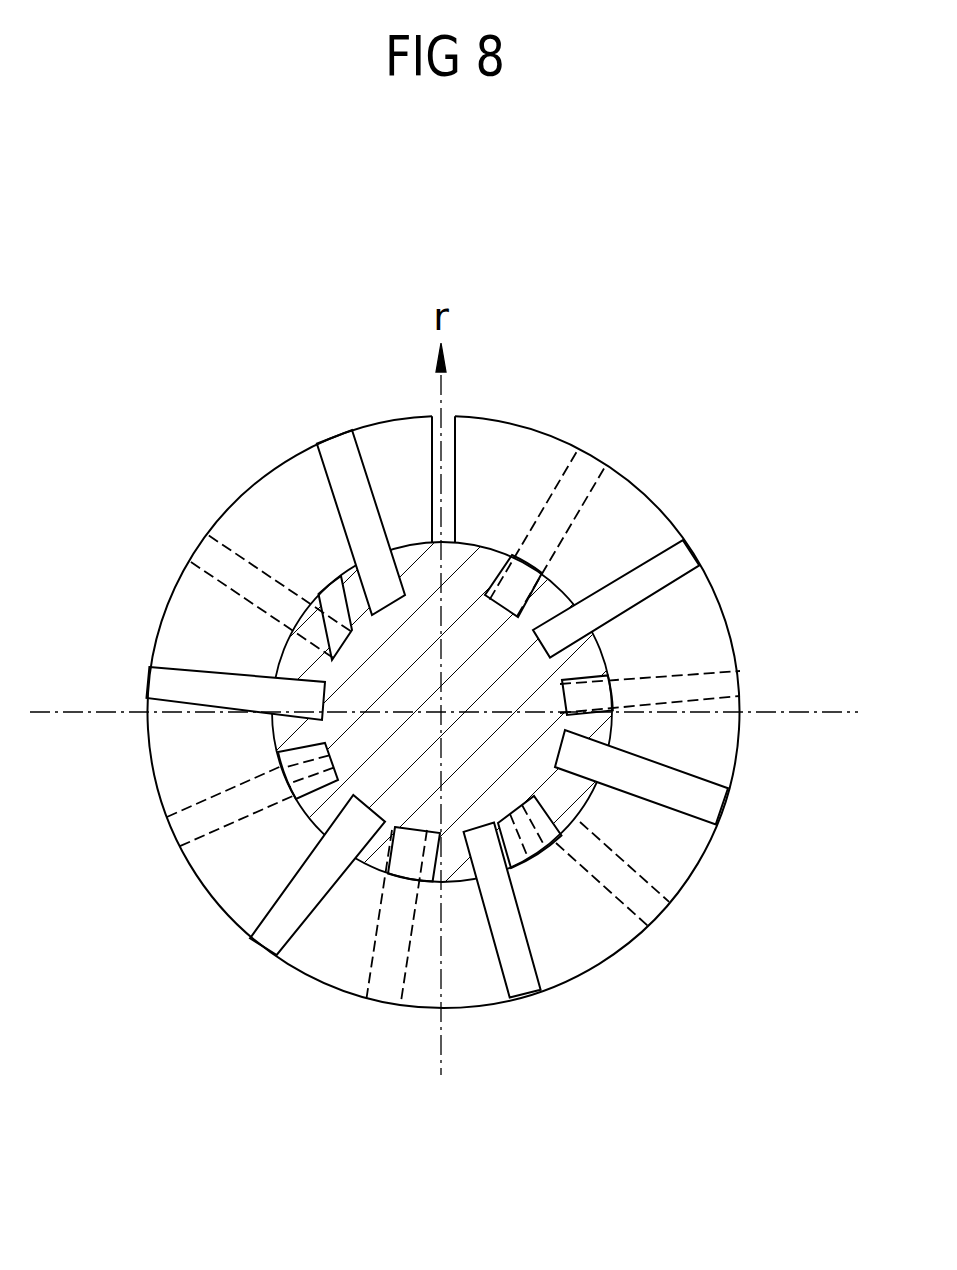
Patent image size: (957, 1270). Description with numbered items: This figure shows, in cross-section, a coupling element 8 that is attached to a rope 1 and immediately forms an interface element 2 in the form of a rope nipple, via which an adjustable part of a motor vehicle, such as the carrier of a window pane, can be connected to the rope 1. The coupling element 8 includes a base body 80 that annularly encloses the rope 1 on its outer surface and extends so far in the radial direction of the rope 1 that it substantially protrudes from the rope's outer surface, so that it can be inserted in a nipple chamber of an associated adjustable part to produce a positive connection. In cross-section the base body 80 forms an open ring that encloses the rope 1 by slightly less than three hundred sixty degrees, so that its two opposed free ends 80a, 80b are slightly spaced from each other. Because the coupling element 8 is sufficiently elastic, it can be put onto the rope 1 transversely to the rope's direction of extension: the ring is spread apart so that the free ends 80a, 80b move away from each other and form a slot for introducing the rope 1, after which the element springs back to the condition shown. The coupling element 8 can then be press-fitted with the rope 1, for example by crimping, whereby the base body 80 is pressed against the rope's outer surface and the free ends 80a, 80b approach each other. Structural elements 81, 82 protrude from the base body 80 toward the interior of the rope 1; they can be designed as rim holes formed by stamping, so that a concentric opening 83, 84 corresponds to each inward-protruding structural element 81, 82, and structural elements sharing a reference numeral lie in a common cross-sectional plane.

The rope 1 is at (497, 704).
The interface element 2 is at (140, 598).
The coupling element 8 is at (750, 599).
The base body 80 is at (220, 866).
The free end 80a is at (420, 437).
The free end 80b is at (478, 435).
The structural element 81 is at (447, 745).
The structural element 82 is at (327, 613).
The concentric opening 83 is at (678, 563).
The concentric opening 84 is at (243, 555).